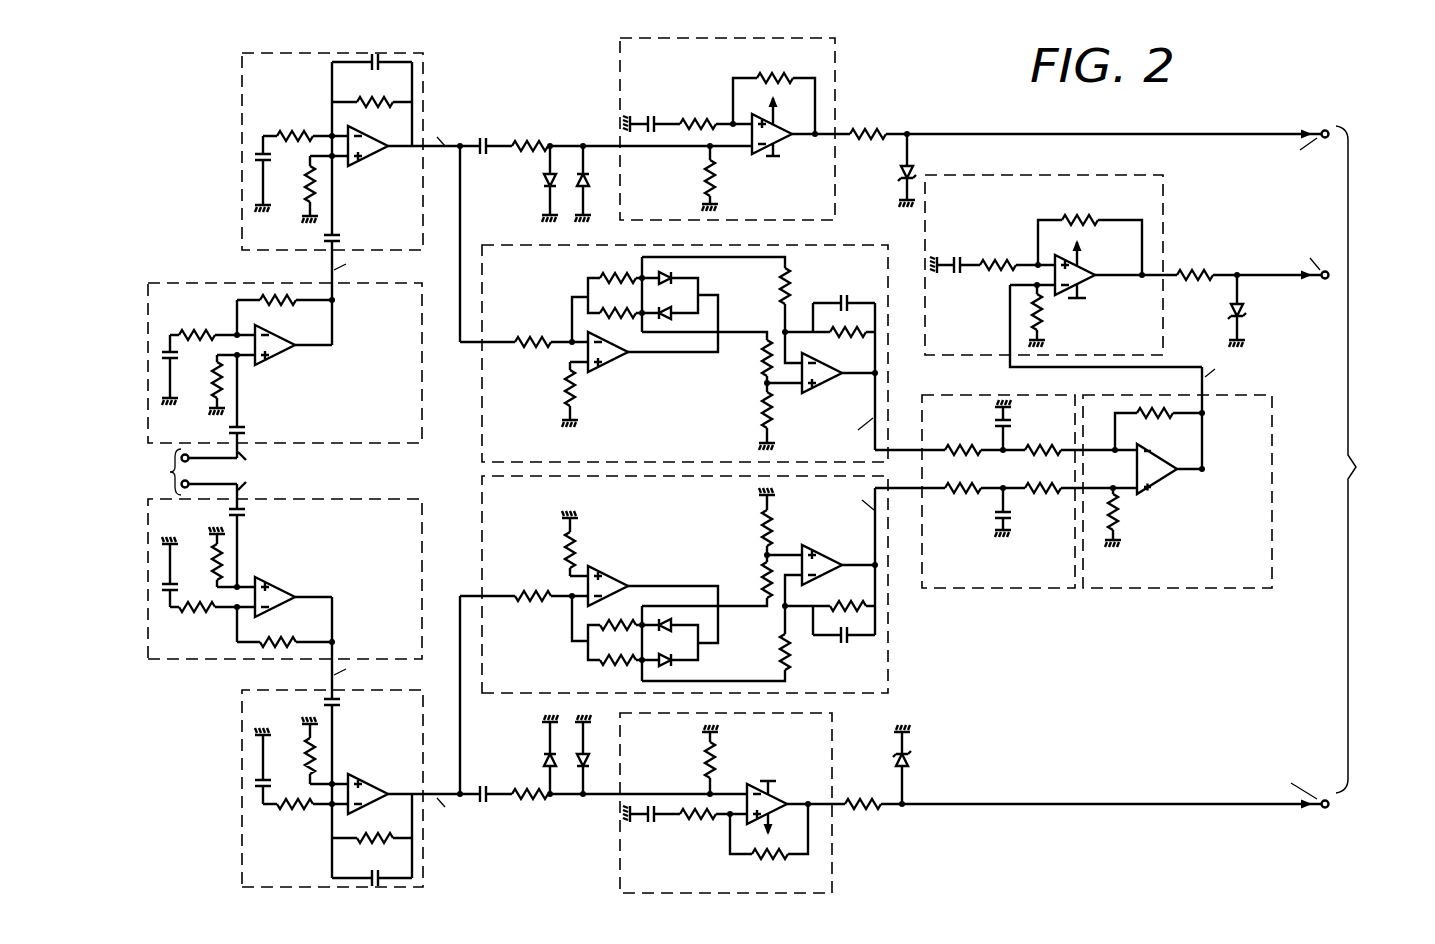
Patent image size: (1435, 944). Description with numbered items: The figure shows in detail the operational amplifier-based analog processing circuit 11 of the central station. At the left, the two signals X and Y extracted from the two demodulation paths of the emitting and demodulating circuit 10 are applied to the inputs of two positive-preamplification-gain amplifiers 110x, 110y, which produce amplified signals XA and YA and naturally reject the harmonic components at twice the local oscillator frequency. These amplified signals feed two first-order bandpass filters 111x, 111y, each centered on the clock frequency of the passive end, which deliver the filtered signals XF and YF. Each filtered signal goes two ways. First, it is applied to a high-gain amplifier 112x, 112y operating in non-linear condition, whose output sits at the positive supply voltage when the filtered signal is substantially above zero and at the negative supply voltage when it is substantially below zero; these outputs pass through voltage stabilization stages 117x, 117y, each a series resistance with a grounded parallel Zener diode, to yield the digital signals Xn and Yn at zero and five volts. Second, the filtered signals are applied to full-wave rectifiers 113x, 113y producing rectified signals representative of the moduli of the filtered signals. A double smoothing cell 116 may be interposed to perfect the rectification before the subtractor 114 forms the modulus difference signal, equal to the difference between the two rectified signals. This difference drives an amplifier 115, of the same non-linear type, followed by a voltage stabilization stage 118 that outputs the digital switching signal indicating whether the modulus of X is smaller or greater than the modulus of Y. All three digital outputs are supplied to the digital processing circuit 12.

The emitting and demodulating circuit 10 is at (149, 474).
The analog processing circuit 11 is at (753, 465).
The digital processing circuit 12 is at (1362, 459).
The preamplification amplifier 110x is at (185, 293).
The preamplification amplifier 110y is at (182, 663).
The first-order bandpass filter 111x is at (251, 86).
The first-order bandpass filter 111y is at (245, 842).
The amplifier 112x is at (620, 62).
The amplifier 112y is at (622, 843).
The full-wave rectifier 113x is at (483, 426).
The full-wave rectifier 113y is at (486, 492).
The subtractor 114 is at (1195, 590).
The amplifier 115 is at (1165, 182).
The double smoothing cell 116 is at (1042, 590).
The voltage stabilization stage 117x is at (900, 164).
The voltage stabilization stage 117y is at (898, 792).
The voltage stabilization stage 118 is at (1234, 304).